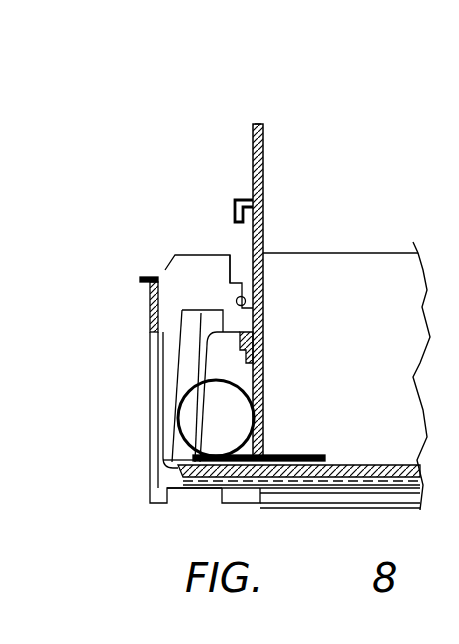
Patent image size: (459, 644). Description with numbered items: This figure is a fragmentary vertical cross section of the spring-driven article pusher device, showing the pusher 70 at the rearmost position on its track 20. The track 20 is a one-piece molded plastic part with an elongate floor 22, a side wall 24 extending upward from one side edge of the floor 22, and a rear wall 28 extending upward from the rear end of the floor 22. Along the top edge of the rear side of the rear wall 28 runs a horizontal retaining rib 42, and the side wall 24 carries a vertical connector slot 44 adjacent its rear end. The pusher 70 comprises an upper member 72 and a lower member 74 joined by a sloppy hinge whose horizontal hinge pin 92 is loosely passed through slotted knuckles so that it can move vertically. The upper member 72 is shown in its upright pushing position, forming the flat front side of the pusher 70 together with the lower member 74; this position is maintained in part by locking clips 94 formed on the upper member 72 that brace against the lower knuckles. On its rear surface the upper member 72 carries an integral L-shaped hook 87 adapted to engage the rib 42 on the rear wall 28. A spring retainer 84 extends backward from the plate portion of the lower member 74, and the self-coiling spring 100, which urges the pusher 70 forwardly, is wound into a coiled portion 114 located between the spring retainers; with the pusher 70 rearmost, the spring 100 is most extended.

The track 20 is at (429, 269).
The floor 22 is at (365, 460).
The side wall 24 is at (364, 295).
The rear wall 28 is at (148, 302).
The rib 42 is at (140, 279).
The vertical connector slot 44 is at (182, 323).
The pusher 70 is at (258, 124).
The upper member 72 is at (265, 155).
The lower member 74 is at (267, 407).
The spring retainer 84 is at (223, 350).
The hook 87 is at (235, 200).
The hinge pin 92 is at (240, 312).
The locking clip 94 is at (238, 262).
The spring 100 is at (188, 390).
The coiled portion 114 is at (186, 425).